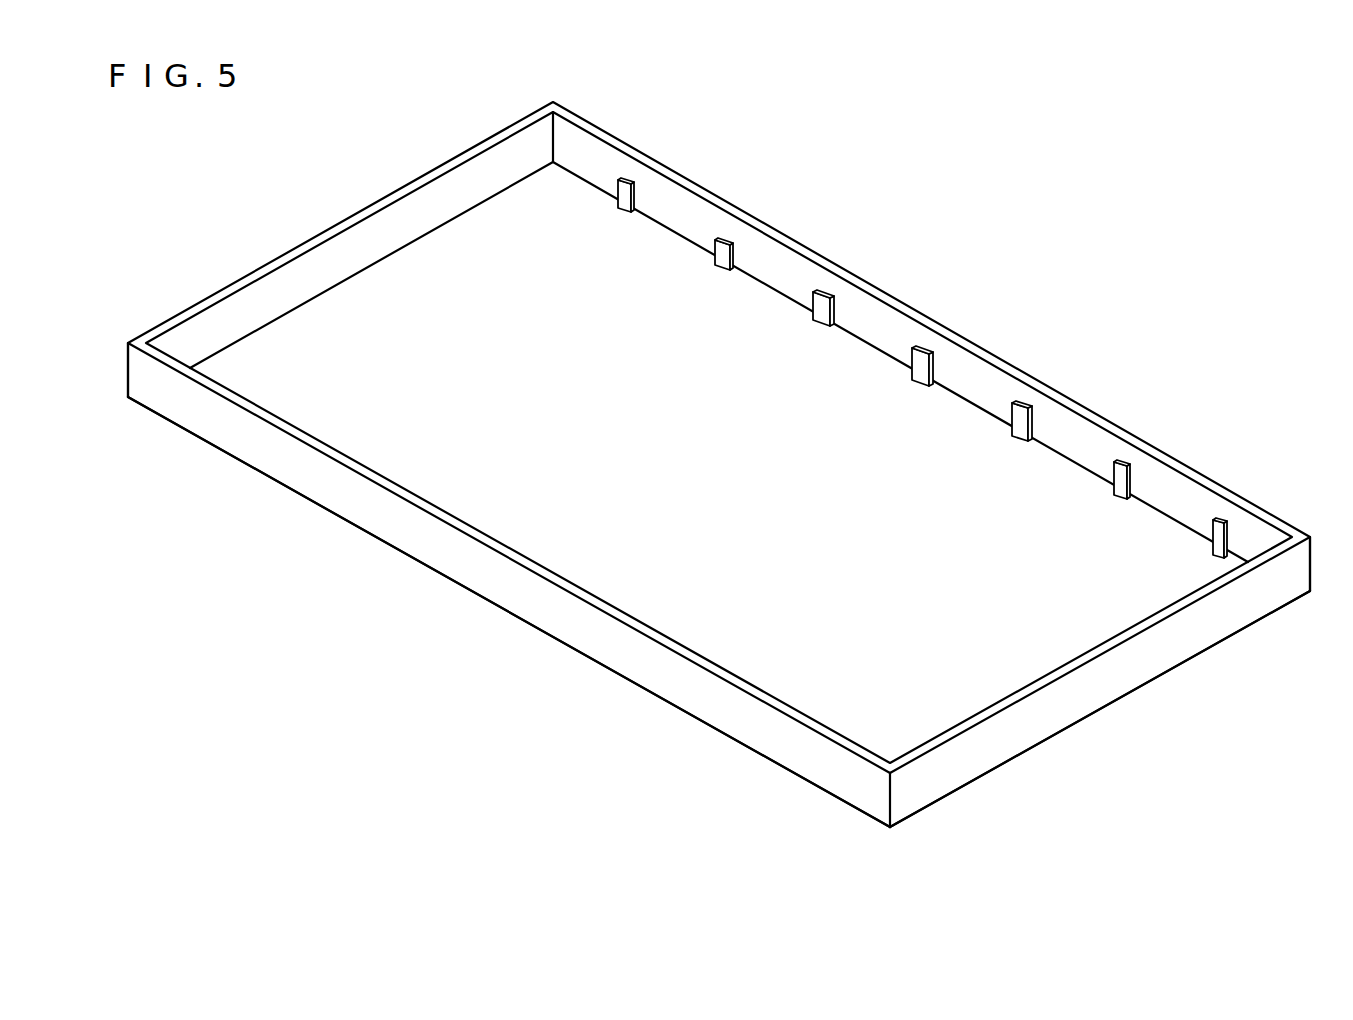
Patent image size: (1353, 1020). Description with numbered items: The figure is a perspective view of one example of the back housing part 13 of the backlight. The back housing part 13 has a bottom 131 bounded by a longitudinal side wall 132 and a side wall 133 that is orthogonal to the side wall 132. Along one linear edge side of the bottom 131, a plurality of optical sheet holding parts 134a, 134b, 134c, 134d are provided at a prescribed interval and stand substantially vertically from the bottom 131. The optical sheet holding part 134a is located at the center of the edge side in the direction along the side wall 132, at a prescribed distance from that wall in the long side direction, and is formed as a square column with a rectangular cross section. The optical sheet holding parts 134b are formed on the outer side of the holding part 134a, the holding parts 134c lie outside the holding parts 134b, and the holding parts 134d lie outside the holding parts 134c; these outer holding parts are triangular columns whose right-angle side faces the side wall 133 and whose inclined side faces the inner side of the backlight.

The back housing part 13 is at (275, 257).
The bottom 131 is at (422, 267).
The side wall 132 is at (1180, 458).
The side wall 133 is at (880, 318).
The optical sheet holding part 134a is at (923, 348).
The optical sheet holding part 134b is at (820, 292).
The optical sheet holding part 134c is at (723, 240).
The optical sheet holding part 134d is at (625, 180).